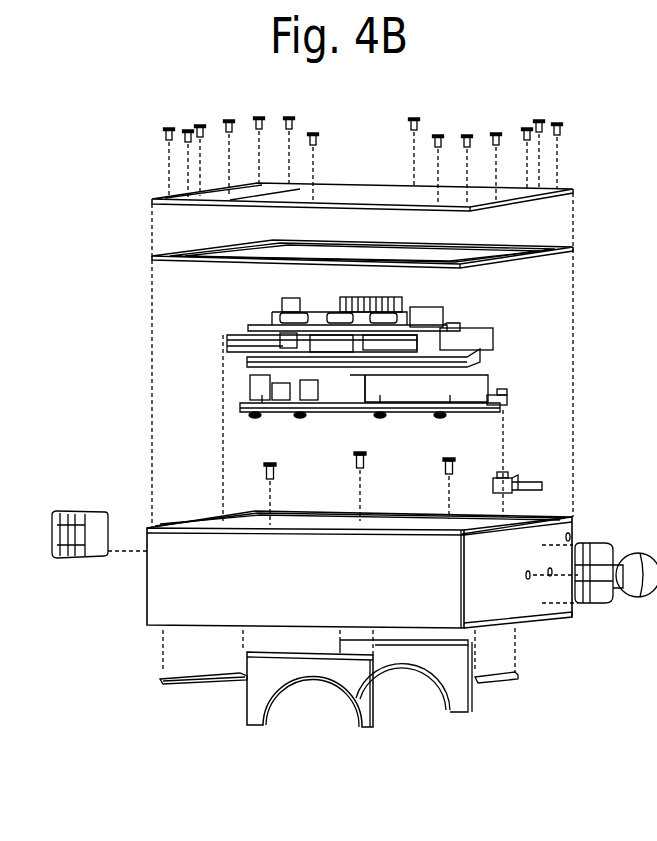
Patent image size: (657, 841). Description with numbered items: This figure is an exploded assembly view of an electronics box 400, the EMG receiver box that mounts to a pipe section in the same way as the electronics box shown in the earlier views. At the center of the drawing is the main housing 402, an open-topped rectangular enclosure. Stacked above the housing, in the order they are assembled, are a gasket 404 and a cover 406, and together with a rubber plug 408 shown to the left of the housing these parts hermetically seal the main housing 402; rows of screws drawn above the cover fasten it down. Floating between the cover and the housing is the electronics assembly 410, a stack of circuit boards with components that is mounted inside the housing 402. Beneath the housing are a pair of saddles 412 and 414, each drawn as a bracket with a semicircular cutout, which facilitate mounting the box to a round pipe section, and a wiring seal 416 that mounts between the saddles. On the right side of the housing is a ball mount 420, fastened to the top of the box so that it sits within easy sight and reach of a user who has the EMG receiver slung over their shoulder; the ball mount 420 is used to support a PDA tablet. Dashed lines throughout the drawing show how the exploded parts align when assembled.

The electronics box 400 is at (178, 48).
The main housing 402 is at (315, 594).
The gasket 404 is at (175, 262).
The cover 406 is at (162, 193).
The rubber plug 408 is at (100, 523).
The electronics assembly 410 is at (238, 303).
The saddle 412 is at (457, 703).
The saddle 414 is at (255, 717).
The wiring seal 416 is at (207, 690).
The ball mount 420 is at (632, 548).